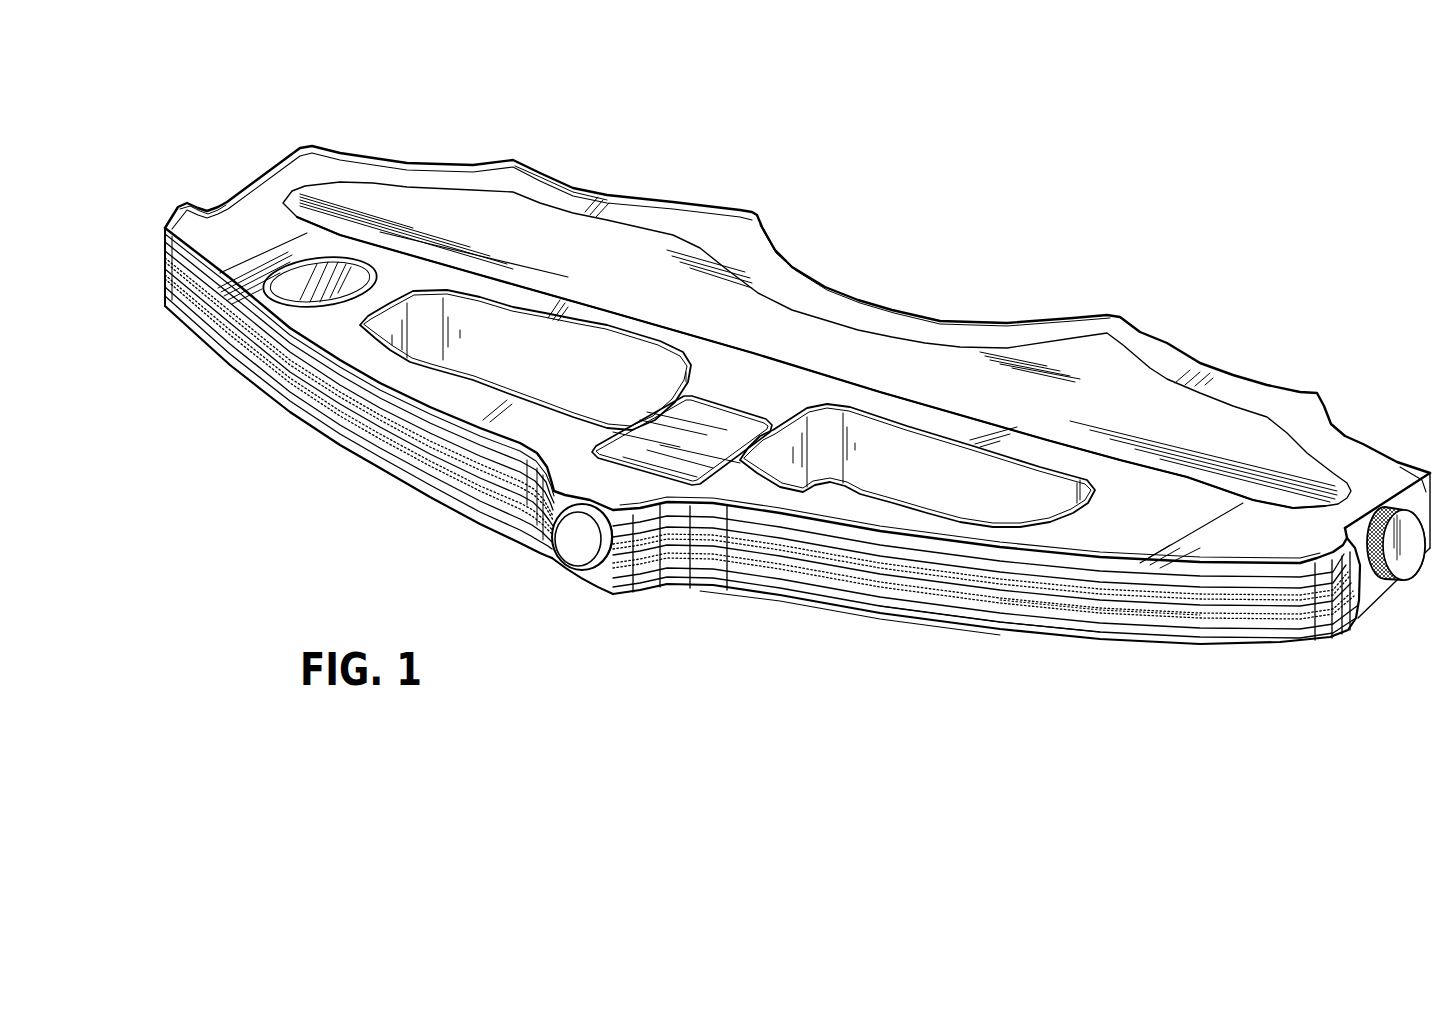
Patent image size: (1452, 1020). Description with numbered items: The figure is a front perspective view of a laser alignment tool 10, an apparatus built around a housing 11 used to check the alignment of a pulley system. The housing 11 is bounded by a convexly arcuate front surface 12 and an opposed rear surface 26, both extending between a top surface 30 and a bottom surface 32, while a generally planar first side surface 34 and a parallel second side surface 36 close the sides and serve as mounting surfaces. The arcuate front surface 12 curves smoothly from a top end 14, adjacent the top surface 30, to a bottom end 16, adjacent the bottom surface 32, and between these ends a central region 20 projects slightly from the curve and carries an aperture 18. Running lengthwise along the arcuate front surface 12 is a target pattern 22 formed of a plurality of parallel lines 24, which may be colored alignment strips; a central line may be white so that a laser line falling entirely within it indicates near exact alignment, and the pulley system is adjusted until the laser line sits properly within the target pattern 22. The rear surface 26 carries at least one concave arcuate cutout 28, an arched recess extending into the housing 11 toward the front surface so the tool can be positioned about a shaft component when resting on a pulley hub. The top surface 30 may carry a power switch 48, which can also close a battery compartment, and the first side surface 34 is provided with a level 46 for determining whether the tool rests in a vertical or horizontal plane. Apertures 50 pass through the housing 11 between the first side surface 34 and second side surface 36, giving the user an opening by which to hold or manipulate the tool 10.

The laser alignment tool 10 is at (238, 112).
The housing 11 is at (316, 176).
The arcuate front surface 12 is at (778, 620).
The top end 14 is at (1345, 618).
The bottom end 16 is at (178, 307).
The aperture 18 is at (578, 550).
The central region 20 is at (633, 576).
The target pattern 22 is at (1003, 620).
The lines 24 is at (1125, 612).
The rear surface 26 is at (597, 174).
The concave arcuate cutout 28 is at (873, 300).
The top surface 30 is at (1425, 487).
The bottom surface 32 is at (221, 192).
The first side surface 34 is at (446, 211).
The second side surface 36 is at (513, 394).
The level 46 is at (288, 284).
The power switch 48 is at (1408, 549).
The aperture 50 is at (571, 415).